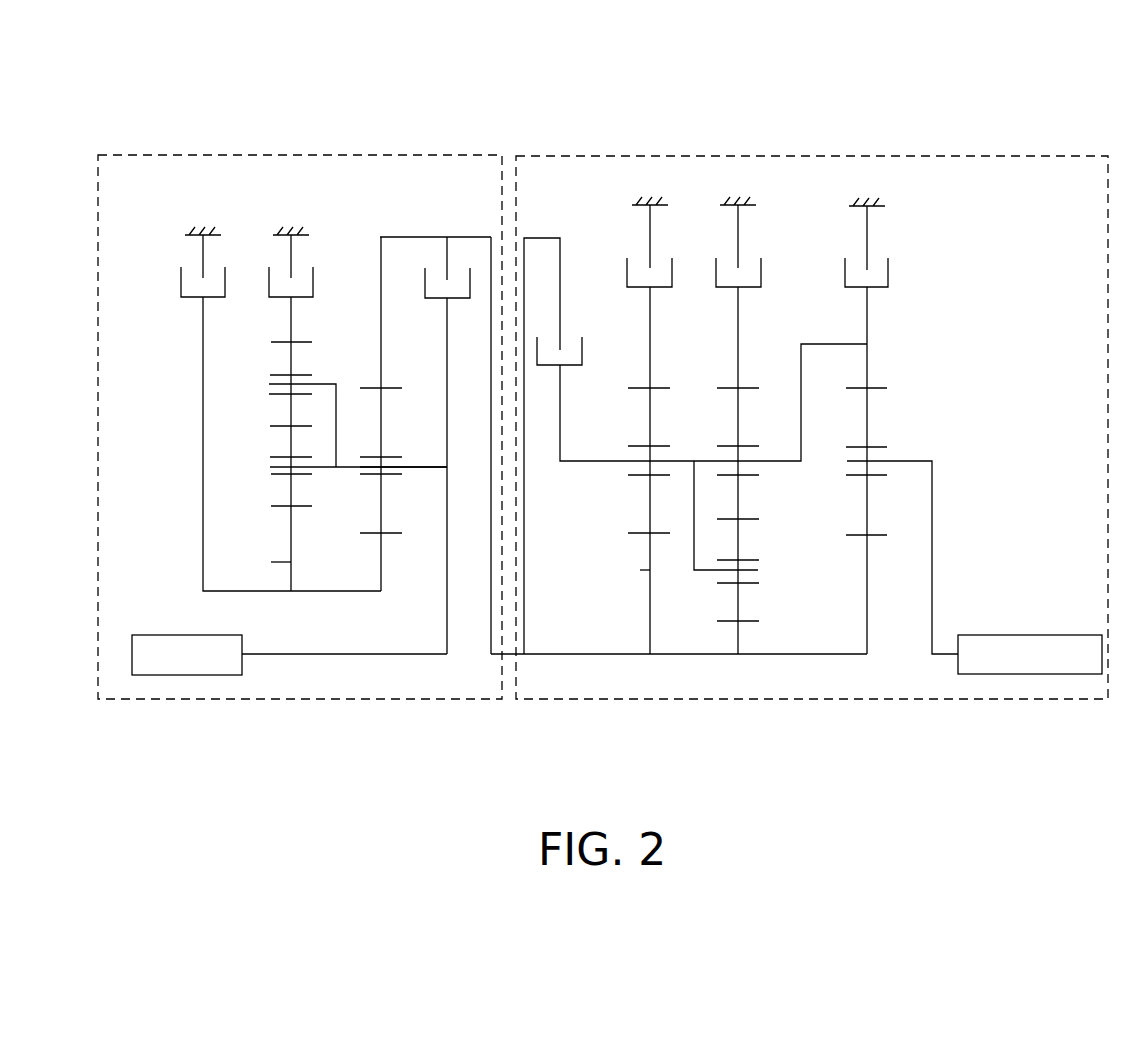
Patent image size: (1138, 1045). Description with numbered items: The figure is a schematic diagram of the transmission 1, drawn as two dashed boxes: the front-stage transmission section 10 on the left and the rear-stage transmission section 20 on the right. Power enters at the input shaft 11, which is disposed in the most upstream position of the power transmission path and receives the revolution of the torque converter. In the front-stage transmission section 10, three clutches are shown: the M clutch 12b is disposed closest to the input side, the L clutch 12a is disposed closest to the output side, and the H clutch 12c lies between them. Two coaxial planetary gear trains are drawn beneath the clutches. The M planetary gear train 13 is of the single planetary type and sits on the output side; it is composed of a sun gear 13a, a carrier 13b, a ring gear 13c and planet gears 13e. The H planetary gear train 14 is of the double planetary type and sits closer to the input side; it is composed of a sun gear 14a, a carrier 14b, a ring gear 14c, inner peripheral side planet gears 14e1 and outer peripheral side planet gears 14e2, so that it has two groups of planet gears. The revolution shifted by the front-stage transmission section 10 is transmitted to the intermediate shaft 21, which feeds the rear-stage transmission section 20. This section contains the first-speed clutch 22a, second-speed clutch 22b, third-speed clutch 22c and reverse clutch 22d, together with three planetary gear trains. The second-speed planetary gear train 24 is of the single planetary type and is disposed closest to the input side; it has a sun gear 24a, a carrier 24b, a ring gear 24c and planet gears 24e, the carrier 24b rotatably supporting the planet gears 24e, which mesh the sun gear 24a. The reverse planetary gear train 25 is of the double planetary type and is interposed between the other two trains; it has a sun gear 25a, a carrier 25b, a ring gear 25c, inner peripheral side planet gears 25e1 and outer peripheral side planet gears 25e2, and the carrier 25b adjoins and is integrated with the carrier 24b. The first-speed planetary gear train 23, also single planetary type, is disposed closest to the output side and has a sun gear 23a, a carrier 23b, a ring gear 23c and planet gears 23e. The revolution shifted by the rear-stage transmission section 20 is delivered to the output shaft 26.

The transmission 1 is at (213, 82).
The front-stage transmission section 10 is at (162, 147).
The input shaft 11 is at (308, 655).
The L clutch 12a is at (432, 258).
The M clutch 12b is at (187, 266).
The H clutch 12c is at (275, 266).
The M planetary gear train 13 is at (371, 298).
The sun gear 13a is at (380, 567).
The carrier 13b is at (403, 464).
The ring gear 13c is at (381, 388).
The planet gears 13e is at (381, 437).
The H planetary gear train 14 is at (313, 327).
The sun gear 14a is at (292, 562).
The carrier 14b is at (272, 474).
The ring gear 14c is at (272, 342).
The inner peripheral side planet gears 14e1 is at (291, 443).
The outer peripheral side planet gears 14e2 is at (291, 403).
The rear-stage transmission section 20 is at (582, 147).
The intermediate shaft 21 is at (540, 655).
The first-speed clutch 22a is at (857, 258).
The second-speed clutch 22b is at (637, 260).
The third-speed clutch 22c is at (570, 337).
The reverse clutch 22d is at (727, 260).
The first-speed planetary gear train 23 is at (867, 658).
The sun gear 23a is at (867, 560).
The carrier 23b is at (900, 461).
The ring gear 23c is at (873, 388).
The planet gears 23e is at (868, 410).
The second-speed planetary gear train 24 is at (652, 658).
The sun gear 24a is at (649, 570).
The carrier 24b is at (675, 461).
The ring gear 24c is at (645, 388).
The planet gears 24e is at (649, 517).
The reverse planetary gear train 25 is at (745, 658).
The sun gear 25a is at (738, 642).
The carrier 25b is at (762, 461).
The ring gear 25c is at (735, 388).
The inner peripheral side planet gears 25e1 is at (738, 543).
The outer peripheral side planet gears 25e2 is at (738, 502).
The output shaft 26 is at (945, 655).